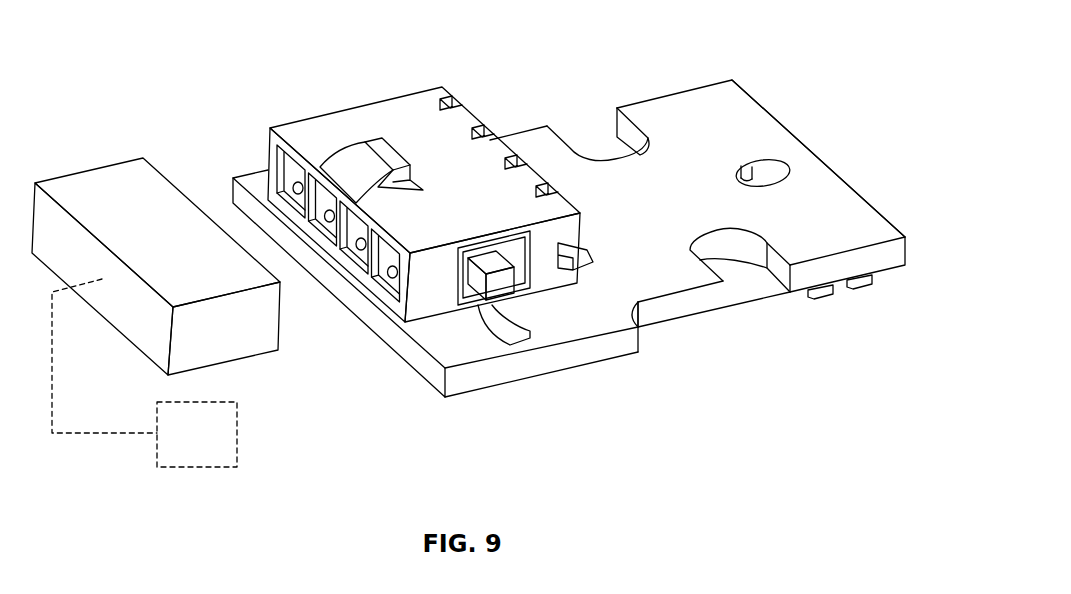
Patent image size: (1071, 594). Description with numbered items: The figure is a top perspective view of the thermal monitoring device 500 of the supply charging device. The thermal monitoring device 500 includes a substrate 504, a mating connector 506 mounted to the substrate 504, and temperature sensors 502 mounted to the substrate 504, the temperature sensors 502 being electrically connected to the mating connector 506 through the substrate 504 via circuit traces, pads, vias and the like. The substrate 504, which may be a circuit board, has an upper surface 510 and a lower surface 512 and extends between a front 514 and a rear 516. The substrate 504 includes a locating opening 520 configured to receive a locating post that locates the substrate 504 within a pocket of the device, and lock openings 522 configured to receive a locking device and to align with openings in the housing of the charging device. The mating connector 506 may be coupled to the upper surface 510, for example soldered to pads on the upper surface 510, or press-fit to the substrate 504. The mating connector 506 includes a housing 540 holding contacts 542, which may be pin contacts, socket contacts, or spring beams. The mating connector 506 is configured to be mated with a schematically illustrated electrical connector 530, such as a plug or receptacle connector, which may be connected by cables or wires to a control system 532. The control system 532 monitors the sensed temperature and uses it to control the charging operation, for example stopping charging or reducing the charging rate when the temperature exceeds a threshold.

The thermal monitoring device 500 is at (582, 227).
The temperature sensors 502 is at (822, 299).
The substrate 504 is at (719, 213).
The mating connector 506 is at (356, 273).
The upper surface 510 is at (435, 304).
The lower surface 512 is at (537, 375).
The front 514 is at (404, 367).
The rear 516 is at (868, 203).
The locating opening 520 is at (772, 158).
The lock openings 522 is at (597, 125).
The electrical connector 530 is at (140, 152).
The control system 532 is at (194, 475).
The housing 540 is at (404, 219).
The contacts 542 is at (298, 184).